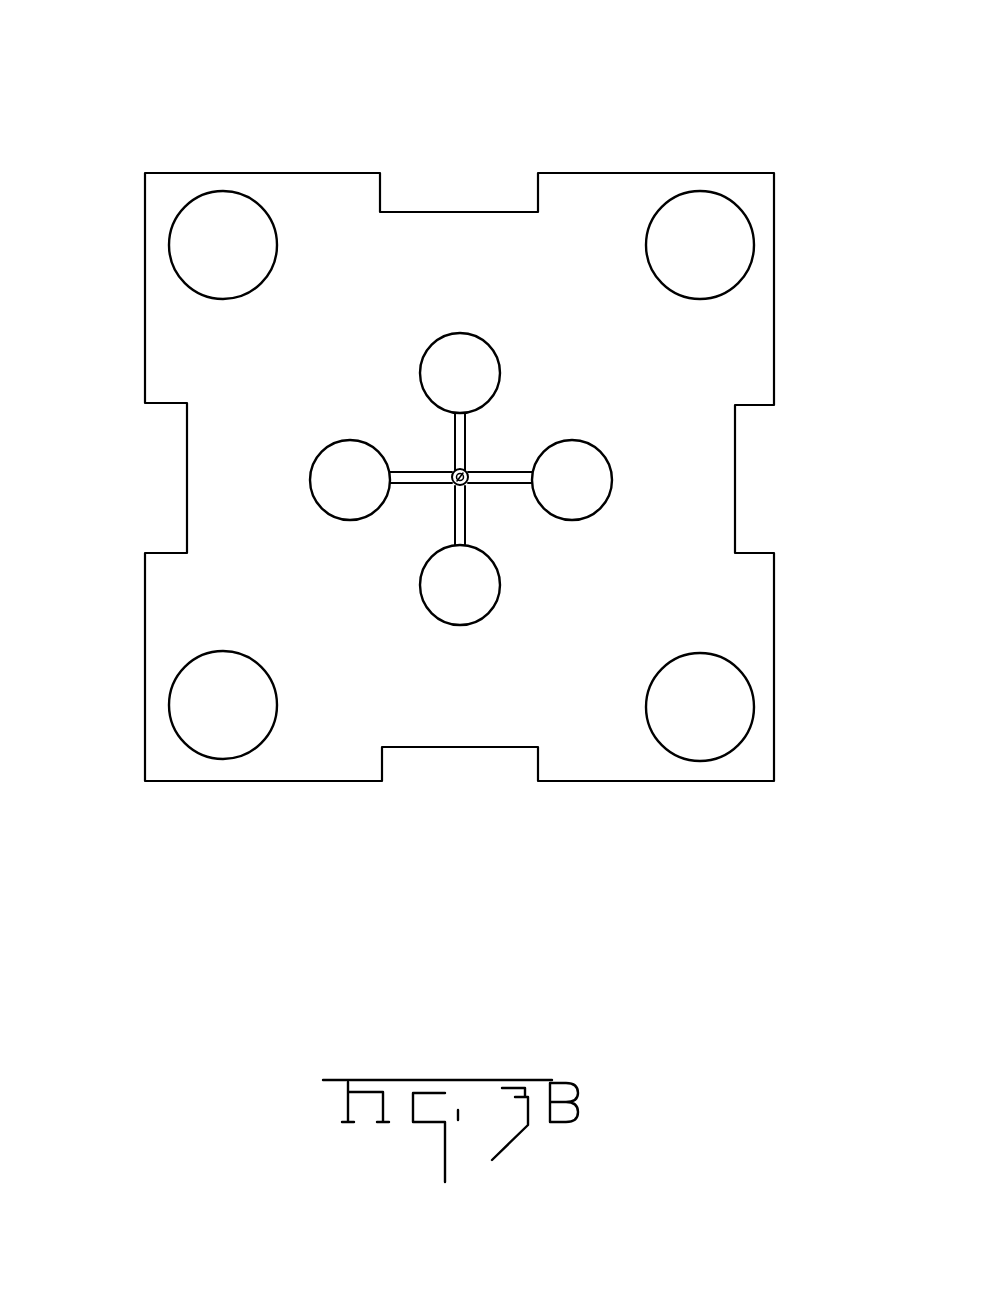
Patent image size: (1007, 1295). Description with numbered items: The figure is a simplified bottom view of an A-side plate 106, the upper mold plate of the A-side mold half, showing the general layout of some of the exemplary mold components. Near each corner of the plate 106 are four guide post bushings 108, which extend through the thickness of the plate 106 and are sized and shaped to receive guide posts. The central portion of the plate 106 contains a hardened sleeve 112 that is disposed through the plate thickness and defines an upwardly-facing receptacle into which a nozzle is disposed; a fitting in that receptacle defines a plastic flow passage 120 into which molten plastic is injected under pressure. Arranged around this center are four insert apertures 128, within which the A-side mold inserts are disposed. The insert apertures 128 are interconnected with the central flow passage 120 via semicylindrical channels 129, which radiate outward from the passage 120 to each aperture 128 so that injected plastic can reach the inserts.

The A-side plate 106 is at (778, 347).
The guide post bushings 108 is at (172, 242).
The hardened sleeve 112 is at (470, 488).
The plastic flow passage 120 is at (466, 468).
The insert apertures 128 is at (465, 343).
The semicylindrical channels 129 is at (447, 440).